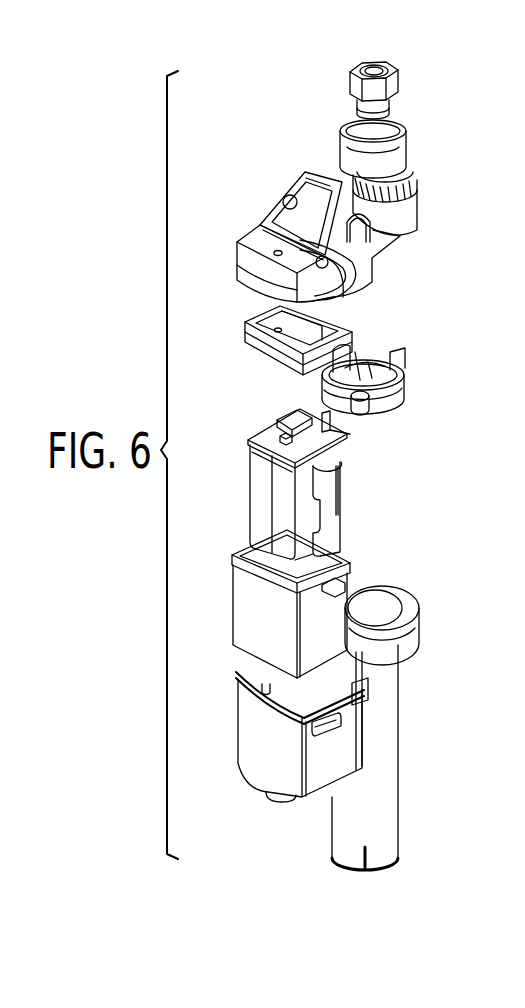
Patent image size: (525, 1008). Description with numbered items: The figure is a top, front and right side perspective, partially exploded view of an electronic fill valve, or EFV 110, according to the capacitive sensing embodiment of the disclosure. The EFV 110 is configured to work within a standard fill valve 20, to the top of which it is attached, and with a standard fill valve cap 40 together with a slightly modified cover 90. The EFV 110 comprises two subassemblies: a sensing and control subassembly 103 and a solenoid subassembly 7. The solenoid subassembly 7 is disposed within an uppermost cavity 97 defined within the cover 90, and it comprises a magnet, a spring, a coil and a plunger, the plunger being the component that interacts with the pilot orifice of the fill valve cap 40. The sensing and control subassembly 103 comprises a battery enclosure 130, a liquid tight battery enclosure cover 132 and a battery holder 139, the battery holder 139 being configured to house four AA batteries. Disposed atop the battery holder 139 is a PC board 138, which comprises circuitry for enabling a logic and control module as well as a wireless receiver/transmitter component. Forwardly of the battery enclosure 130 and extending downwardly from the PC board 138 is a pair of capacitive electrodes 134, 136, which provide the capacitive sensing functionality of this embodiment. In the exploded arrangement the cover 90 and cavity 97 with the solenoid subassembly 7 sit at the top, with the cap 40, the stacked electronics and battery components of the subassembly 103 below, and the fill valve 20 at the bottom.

The solenoid subassembly 7 is at (414, 80).
The uppermost cavity 97 is at (401, 160).
The EFV 110 is at (218, 224).
The cover 90 is at (335, 175).
The battery enclosure cover 132 is at (257, 317).
The fill valve cap 40 is at (397, 357).
The PC board 138 is at (395, 411).
The capacitive electrode 134 is at (257, 478).
The capacitive electrode 136 is at (280, 518).
The battery holder 139 is at (325, 491).
The sensing and control subassembly 103 is at (214, 524).
The battery enclosure 130 is at (277, 628).
The fill valve 20 is at (400, 745).